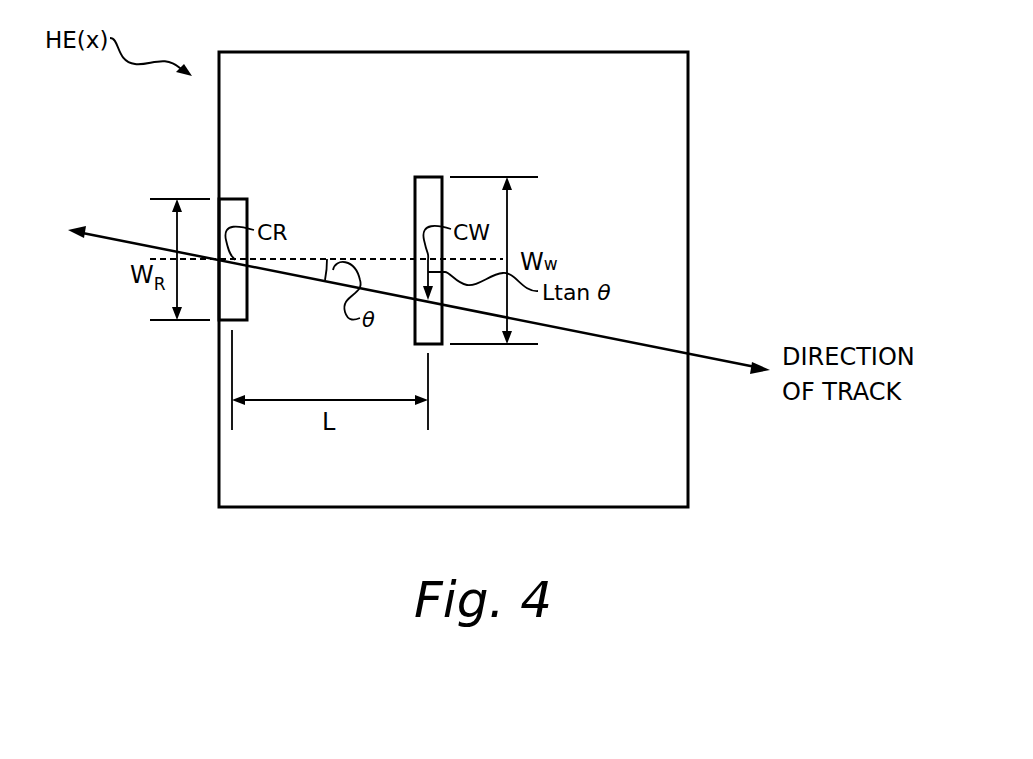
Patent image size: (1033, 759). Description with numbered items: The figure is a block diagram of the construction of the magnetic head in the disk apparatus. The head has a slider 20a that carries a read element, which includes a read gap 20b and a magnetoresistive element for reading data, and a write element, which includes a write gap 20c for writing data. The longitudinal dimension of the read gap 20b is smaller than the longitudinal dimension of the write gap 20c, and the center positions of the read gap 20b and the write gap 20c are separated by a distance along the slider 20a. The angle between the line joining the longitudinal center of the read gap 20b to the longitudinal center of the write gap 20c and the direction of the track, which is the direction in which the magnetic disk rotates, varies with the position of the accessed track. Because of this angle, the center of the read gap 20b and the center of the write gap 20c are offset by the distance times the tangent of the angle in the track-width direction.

The slider 20a is at (632, 52).
The read gap 20b is at (237, 199).
The write gap 20c is at (432, 177).